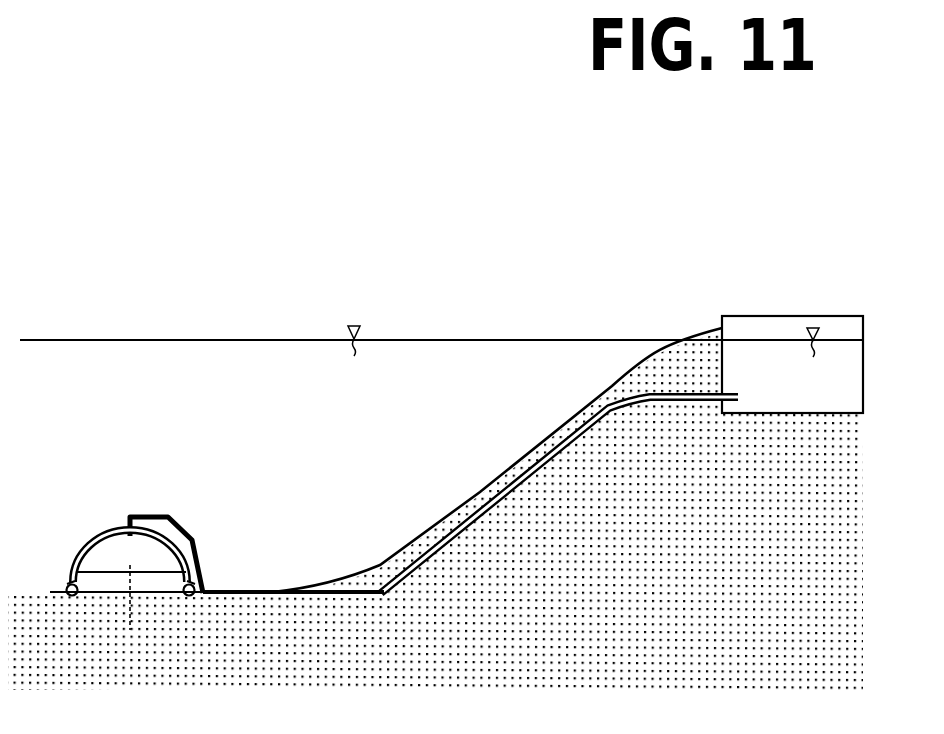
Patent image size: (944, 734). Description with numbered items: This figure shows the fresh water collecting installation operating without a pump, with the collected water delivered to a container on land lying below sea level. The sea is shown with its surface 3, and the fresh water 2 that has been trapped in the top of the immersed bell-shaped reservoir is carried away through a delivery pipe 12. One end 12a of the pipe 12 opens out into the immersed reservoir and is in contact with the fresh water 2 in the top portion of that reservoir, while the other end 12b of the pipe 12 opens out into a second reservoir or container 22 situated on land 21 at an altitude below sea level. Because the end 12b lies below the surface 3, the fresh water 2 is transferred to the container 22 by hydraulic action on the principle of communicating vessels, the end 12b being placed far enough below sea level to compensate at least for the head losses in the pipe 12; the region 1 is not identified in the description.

The body of water / sea 1 is at (117, 424).
The fresh water 2 is at (782, 382).
The surface of the sea 3 is at (230, 332).
The delivery pipe 12 is at (208, 549).
The end of the pipe 12a is at (114, 558).
The other end of the pipe 12b is at (712, 412).
The land 21 is at (688, 362).
The second reservoir or container 22 is at (774, 327).